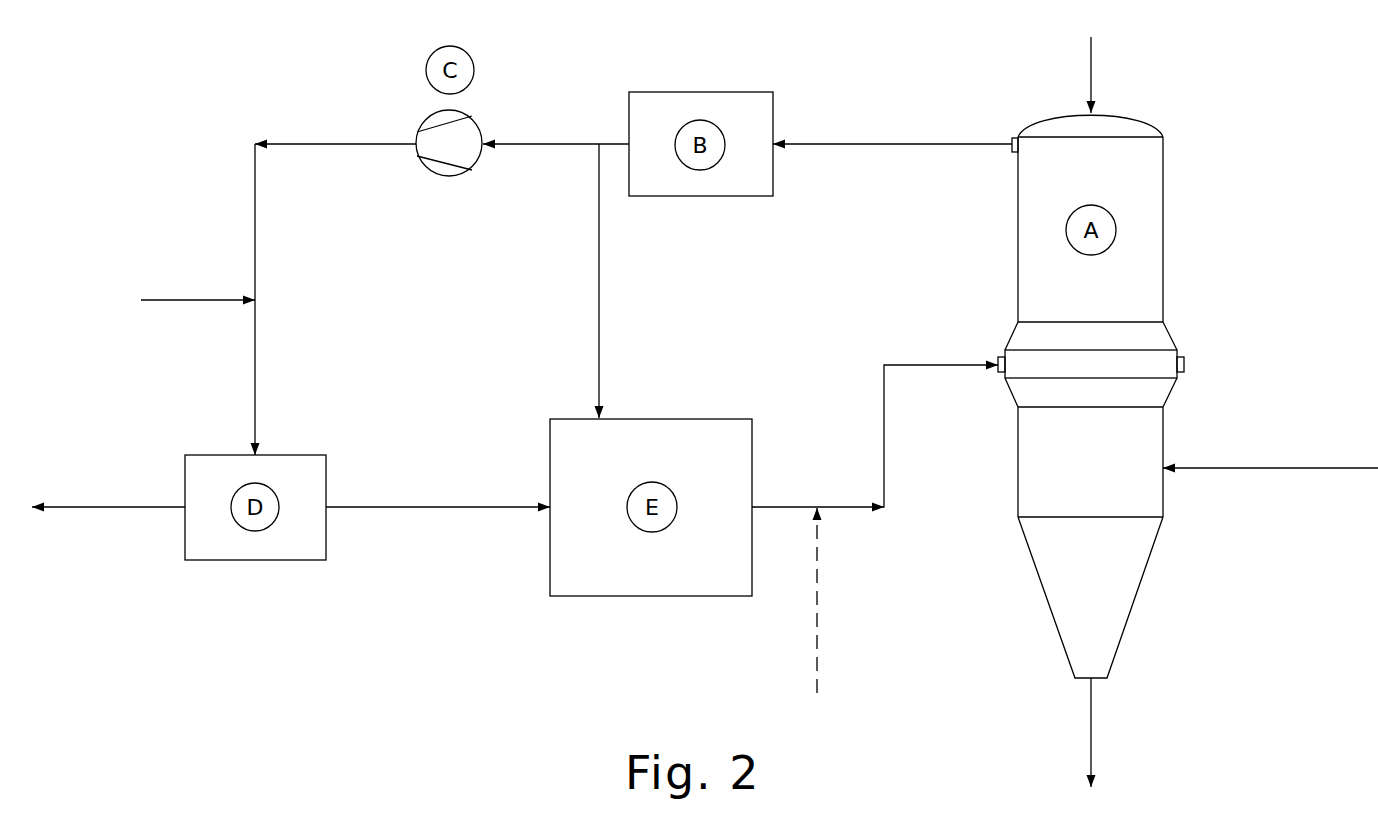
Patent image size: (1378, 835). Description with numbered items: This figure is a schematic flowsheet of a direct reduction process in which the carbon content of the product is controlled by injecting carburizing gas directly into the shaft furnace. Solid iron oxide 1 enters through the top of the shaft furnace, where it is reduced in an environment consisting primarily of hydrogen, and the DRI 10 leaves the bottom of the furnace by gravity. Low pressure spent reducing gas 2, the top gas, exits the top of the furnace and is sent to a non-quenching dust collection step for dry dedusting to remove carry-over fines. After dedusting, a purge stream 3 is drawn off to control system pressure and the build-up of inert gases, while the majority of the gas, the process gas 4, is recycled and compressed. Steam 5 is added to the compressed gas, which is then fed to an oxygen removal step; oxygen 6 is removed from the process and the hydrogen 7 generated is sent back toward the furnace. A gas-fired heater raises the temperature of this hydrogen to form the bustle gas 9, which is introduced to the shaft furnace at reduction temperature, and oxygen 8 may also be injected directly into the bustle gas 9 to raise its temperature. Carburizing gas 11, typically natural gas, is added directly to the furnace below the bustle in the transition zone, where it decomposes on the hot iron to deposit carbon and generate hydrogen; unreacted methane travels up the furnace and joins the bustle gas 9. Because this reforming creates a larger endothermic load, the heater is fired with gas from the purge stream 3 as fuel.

The solid iron oxide 1 is at (1091, 70).
The spent reducing gas 2 is at (900, 147).
The purge stream 3 is at (599, 295).
The process gas 4 is at (556, 140).
The steam 5 is at (186, 298).
The oxygen 6 is at (116, 506).
The hydrogen 7 is at (436, 506).
The oxygen 8 is at (817, 610).
The bustle gas 9 is at (884, 446).
The DRI 10 is at (1091, 735).
The carburizing gas 11 is at (1295, 470).